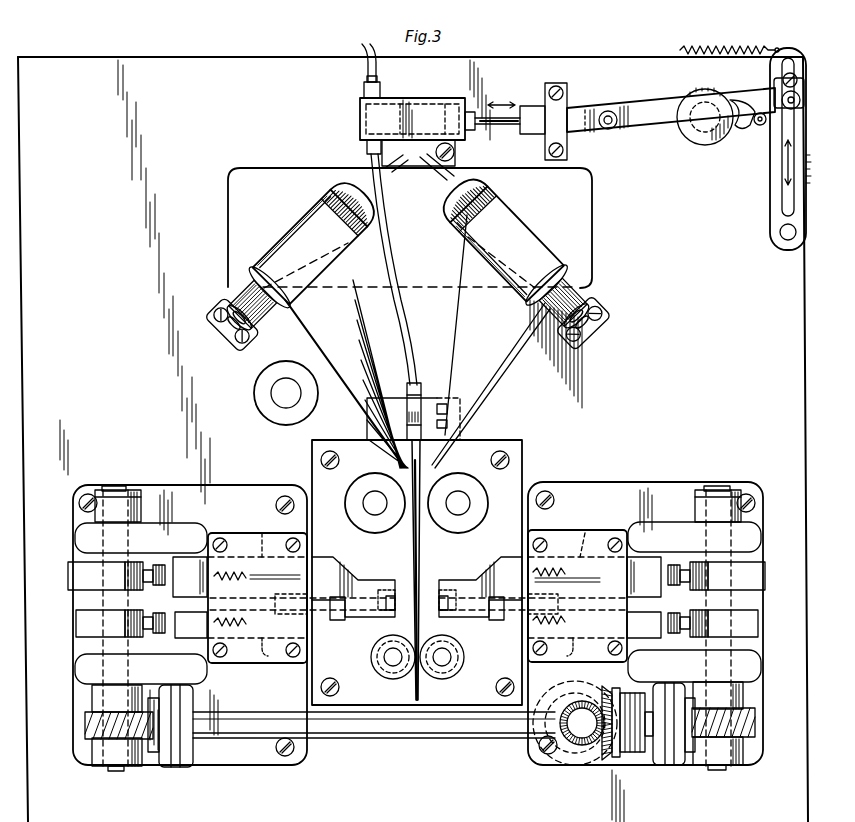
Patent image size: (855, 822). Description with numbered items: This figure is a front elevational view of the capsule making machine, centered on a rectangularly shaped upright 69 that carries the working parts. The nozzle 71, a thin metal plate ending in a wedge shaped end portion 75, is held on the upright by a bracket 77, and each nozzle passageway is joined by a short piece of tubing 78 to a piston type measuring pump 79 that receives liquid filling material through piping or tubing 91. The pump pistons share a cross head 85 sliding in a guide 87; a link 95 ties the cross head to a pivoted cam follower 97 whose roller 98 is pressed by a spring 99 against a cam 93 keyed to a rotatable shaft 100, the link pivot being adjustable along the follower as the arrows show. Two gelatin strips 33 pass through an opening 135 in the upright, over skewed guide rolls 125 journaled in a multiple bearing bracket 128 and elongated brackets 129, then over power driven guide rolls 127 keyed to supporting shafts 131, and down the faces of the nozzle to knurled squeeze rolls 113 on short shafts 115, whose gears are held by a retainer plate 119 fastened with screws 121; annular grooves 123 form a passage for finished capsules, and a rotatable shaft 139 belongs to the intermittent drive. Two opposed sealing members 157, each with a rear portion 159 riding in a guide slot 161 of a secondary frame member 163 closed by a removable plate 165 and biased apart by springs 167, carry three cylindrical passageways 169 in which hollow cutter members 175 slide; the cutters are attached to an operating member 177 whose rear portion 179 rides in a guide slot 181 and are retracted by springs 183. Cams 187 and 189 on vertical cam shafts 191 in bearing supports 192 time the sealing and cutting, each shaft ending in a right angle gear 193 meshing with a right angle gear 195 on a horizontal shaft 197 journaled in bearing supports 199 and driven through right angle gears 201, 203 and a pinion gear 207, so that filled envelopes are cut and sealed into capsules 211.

The upright 69 is at (218, 82).
The piping or tubing 91 is at (364, 68).
The measuring pump 79 is at (420, 106).
The multiple bearing bracket 128 is at (455, 154).
The cross head 85 is at (530, 108).
The guide 87 is at (558, 110).
The link 95 is at (652, 110).
The rotatable shaft 100 is at (706, 130).
The cam 93 is at (737, 130).
The roller 98 is at (760, 128).
The cam follower 97 is at (775, 190).
The spring 99 is at (725, 46).
The opening 135 is at (590, 203).
The skewed guide roll 125 is at (262, 282).
The elongated bracket 129 is at (226, 340).
The tubing 78 is at (400, 276).
The gelatin strip 33 is at (371, 340).
The rotatable shaft 139 is at (284, 393).
The bracket 77 is at (429, 404).
The nozzle 71 is at (418, 448).
The wedge shaped end portion 75 is at (421, 542).
The retainer plate 119 is at (516, 490).
The screw 121 is at (331, 452).
The power driven guide roll 127 is at (356, 522).
The supporting shaft 131 is at (372, 504).
The sealing member 157 is at (322, 565).
The cylindrical passageway 169 is at (378, 592).
The cutter member 175 is at (417, 620).
The capsule 211 is at (400, 645).
The short shaft 115 is at (384, 656).
The annular groove 123 is at (380, 664).
The squeeze roll 113 is at (392, 680).
The secondary frame member 163 is at (195, 490).
The vertical cam shaft 191 is at (718, 488).
The bearing support 192 is at (85, 539).
The cam 187 is at (70, 580).
The cam 189 is at (75, 627).
The removable plate 165 is at (247, 667).
The guide slot 161 is at (263, 535).
The rear portion 159 is at (192, 560).
The rear portion 179 is at (190, 640).
The spring 167 is at (407, 584).
The spring 183 is at (389, 612).
The operating member 177 is at (312, 626).
The guide slot 181 is at (434, 652).
The right angle gear 193 is at (85, 725).
The right angle gear 195 is at (152, 752).
The bearing support 199 is at (176, 767).
The horizontal shaft 197 is at (420, 739).
The pinion gear 207 is at (585, 678).
The right angle gear 203 is at (576, 765).
The right angle gear 201 is at (606, 762).